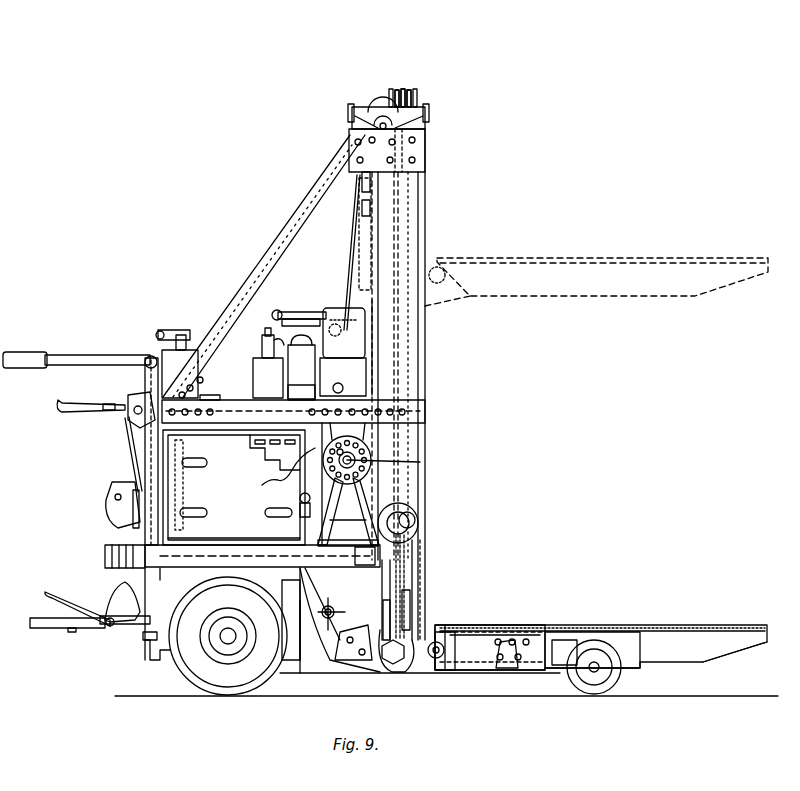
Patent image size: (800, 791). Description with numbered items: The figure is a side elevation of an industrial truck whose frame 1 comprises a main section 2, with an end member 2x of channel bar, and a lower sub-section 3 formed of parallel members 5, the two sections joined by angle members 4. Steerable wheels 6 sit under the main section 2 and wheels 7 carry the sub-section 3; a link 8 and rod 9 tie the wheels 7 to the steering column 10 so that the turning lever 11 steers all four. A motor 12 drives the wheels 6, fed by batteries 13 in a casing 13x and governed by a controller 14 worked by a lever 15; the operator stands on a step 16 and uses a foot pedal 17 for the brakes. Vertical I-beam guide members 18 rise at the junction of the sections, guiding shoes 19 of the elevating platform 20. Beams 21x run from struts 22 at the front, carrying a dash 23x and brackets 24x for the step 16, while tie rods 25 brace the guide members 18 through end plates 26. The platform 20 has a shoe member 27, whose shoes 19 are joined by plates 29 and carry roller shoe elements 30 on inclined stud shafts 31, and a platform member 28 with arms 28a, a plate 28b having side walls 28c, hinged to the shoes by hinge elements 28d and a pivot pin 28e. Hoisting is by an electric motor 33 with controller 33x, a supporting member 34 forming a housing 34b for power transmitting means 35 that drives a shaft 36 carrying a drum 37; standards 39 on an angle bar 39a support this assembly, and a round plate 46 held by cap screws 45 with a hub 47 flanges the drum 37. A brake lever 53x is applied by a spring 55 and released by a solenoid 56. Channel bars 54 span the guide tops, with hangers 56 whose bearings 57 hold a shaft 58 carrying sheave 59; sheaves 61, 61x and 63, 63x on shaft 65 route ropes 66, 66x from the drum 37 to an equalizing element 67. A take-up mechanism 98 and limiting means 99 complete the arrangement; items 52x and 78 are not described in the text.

The frame 1 is at (112, 543).
The main section 2 is at (262, 556).
The end member 2x is at (346, 555).
The sub-section 3 is at (490, 661).
The angle members 4 is at (345, 660).
The parallel members 5 is at (486, 672).
The wheels 6 is at (230, 670).
The wheels 7 is at (598, 678).
The link 8 is at (300, 678).
The rod 9 is at (172, 662).
The steering column 10 is at (145, 380).
The turning lever 11 is at (84, 358).
The motor 12 is at (296, 615).
The casing 13x is at (234, 487).
The battery 13 is at (285, 465).
The controller 14 is at (108, 490).
The lever 15 is at (70, 412).
The step 16 is at (45, 630).
The foot pedal 17 is at (60, 596).
The guide members 18 is at (420, 210).
The shoes 19 is at (412, 542).
The elevating device or platform 20 is at (606, 258).
The beams 21x is at (240, 400).
The struts 22 is at (140, 450).
The dash 23x is at (160, 484).
The brackets 24x is at (138, 628).
The tie rods 25 is at (255, 270).
The end plate 26 is at (420, 152).
The shoe member 27 is at (414, 672).
The platform member 28 is at (601, 662).
The arms 28a is at (512, 634).
The plate 28b is at (706, 626).
The side walls 28c is at (712, 652).
The hinge element 28d is at (442, 648).
The pivot pin 28e is at (504, 640).
The plates 29 is at (420, 555).
The shoe elements 30 is at (415, 518).
The stud shaft 31 is at (412, 522).
The controller 33x is at (188, 342).
The motor 33 is at (301, 367).
The supporting member 34 is at (352, 372).
The housing 34b is at (293, 411).
The power transmitting means 35 is at (352, 428).
The shaft 36 is at (400, 462).
The drum 37 is at (373, 488).
The standards 39 is at (348, 536).
The angle bar 39a is at (300, 536).
The cap screws 45 is at (360, 448).
The round plate 46 is at (370, 466).
The hub 47 is at (288, 482).
The pipe 52x is at (300, 312).
The operating lever 53x is at (290, 315).
The channel bars 54 is at (350, 110).
The spring 55 is at (264, 340).
The solenoid 56 is at (412, 106).
The bearings 57 is at (384, 122).
The shaft 58 is at (376, 122).
The sheave 59 is at (382, 115).
The sheave 61 is at (410, 94).
The sheave 61x is at (403, 92).
The sheave 63 is at (408, 580).
The sheave 63x is at (400, 570).
The shaft 65 is at (412, 600).
The rope 66 is at (352, 236).
The rope 66x is at (397, 92).
The equalizing element 67 is at (362, 208).
The control box 78 is at (334, 318).
The take-up mechanism 98 is at (362, 262).
The limiting means 99 is at (384, 347).